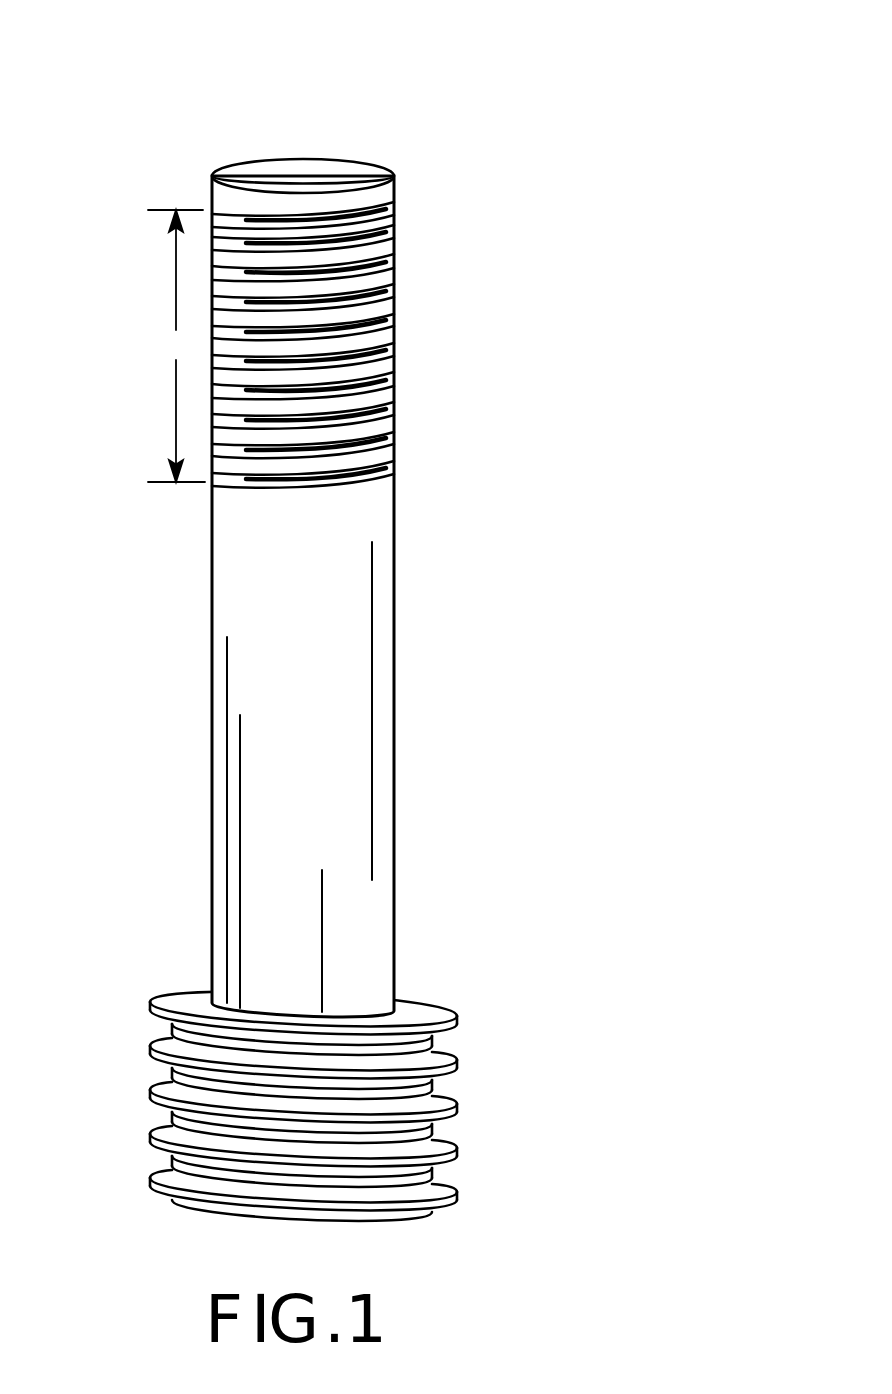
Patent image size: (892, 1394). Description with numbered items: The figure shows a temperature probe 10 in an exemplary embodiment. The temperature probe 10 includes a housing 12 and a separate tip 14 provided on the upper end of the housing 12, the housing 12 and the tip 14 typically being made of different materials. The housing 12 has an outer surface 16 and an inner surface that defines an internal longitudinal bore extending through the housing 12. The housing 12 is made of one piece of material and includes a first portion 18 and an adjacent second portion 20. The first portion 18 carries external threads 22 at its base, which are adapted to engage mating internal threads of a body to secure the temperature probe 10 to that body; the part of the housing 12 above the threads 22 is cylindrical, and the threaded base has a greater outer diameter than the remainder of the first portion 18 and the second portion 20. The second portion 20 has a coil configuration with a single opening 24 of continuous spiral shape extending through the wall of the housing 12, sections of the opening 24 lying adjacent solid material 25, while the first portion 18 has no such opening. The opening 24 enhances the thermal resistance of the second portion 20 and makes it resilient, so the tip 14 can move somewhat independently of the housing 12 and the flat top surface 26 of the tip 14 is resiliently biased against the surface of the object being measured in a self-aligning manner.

The temperature probe 10 is at (381, 618).
The housing 12 is at (413, 594).
The tip 14 is at (374, 104).
The outer surface 16 is at (395, 687).
The first portion 18 is at (195, 652).
The second portion 20 is at (384, 345).
The external threads 22 is at (458, 1058).
The opening 24 is at (393, 403).
The solid material 25 is at (393, 330).
The top surface 26 is at (306, 172).